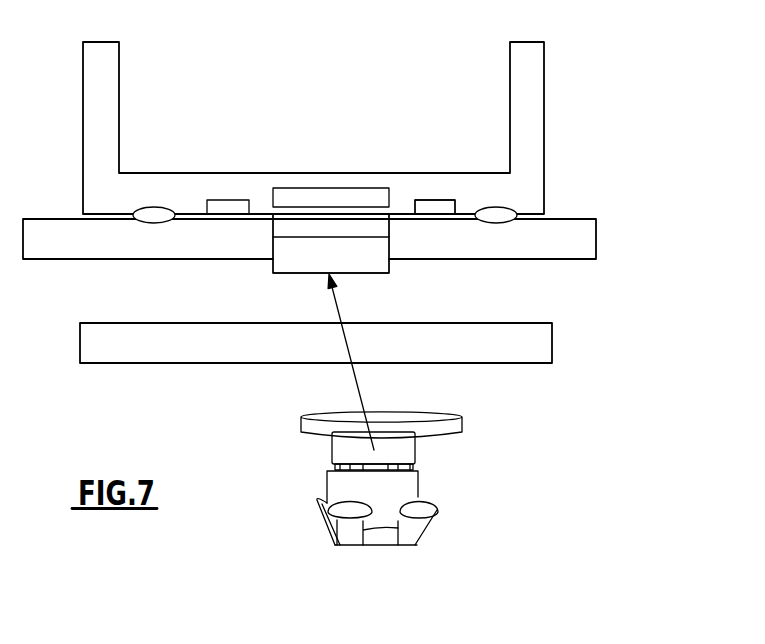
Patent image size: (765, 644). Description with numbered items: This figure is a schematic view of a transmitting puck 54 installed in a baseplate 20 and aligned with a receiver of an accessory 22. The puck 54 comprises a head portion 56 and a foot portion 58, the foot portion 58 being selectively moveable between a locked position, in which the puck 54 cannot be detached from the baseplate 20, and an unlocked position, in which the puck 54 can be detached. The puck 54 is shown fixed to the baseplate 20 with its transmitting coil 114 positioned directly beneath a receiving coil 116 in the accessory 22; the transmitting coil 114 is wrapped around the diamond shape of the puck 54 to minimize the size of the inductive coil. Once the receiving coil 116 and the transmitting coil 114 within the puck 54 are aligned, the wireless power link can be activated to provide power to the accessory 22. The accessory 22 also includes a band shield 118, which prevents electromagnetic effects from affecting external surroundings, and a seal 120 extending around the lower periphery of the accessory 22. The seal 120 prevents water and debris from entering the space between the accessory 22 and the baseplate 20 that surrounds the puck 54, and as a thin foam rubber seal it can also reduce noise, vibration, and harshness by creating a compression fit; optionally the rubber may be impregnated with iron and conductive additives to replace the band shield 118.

The baseplate 20 is at (582, 238).
The accessory 22 is at (521, 80).
The transmitting puck 54 is at (390, 272).
The head portion 56 is at (415, 448).
The foot portion 58 is at (345, 535).
The transmitting coil 114 is at (299, 228).
The receiving coil 116 is at (308, 198).
The band shield 118 is at (428, 198).
The seal 120 is at (500, 222).